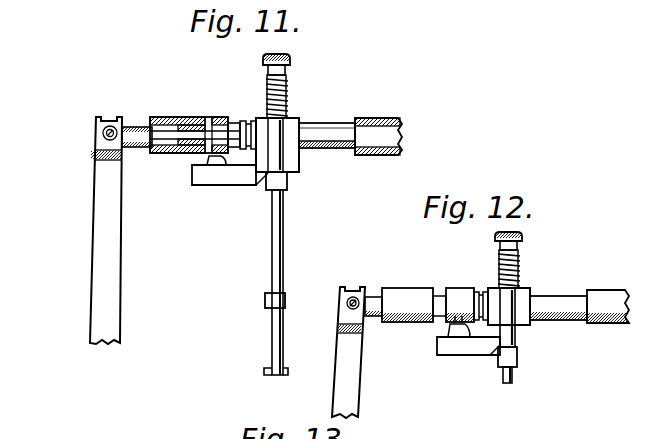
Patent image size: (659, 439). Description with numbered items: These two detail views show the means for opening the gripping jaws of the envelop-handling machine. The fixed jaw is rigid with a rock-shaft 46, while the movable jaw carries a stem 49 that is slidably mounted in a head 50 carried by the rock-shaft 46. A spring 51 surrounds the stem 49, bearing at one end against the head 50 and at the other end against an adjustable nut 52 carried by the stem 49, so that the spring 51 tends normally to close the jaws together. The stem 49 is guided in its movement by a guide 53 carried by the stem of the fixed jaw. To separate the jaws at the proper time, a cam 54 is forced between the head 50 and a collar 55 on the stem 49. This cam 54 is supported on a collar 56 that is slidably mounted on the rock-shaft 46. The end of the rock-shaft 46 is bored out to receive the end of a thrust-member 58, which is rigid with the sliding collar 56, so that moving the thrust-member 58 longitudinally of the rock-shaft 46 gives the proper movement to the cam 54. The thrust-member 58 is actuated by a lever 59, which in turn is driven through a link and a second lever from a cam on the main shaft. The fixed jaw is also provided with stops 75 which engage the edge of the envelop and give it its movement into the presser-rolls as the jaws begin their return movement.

In FIG. 11, the rock-shaft 46 is at (338, 128).
In FIG. 12, the rock-shaft 46 is at (575, 300).
In FIG. 11, the stem 49 is at (284, 258).
In FIG. 12, the stem 49 is at (510, 385).
In FIG. 11, the head 50 is at (285, 168).
In FIG. 12, the head 50 is at (517, 335).
In FIG. 11, the spring 51 is at (288, 98).
In FIG. 12, the spring 51 is at (522, 272).
In FIG. 11, the adjustable nut 52 is at (291, 59).
In FIG. 12, the adjustable nut 52 is at (523, 237).
In FIG. 11, the guide 53 is at (286, 297).
In FIG. 11, the cam 54 is at (243, 178).
In FIG. 12, the cam 54 is at (475, 352).
In FIG. 11, the collar 55 is at (290, 190).
In FIG. 12, the collar 55 is at (520, 360).
In FIG. 11, the sliding collar 56 is at (219, 117).
In FIG. 12, the sliding collar 56 is at (458, 288).
In FIG. 11, the thrust-member 58 is at (138, 132).
In FIG. 12, the thrust-member 58 is at (375, 306).
In FIG. 11, the lever 59 is at (92, 258).
In FIG. 12, the lever 59 is at (335, 390).
In FIG. 11, the stops 75 is at (288, 370).